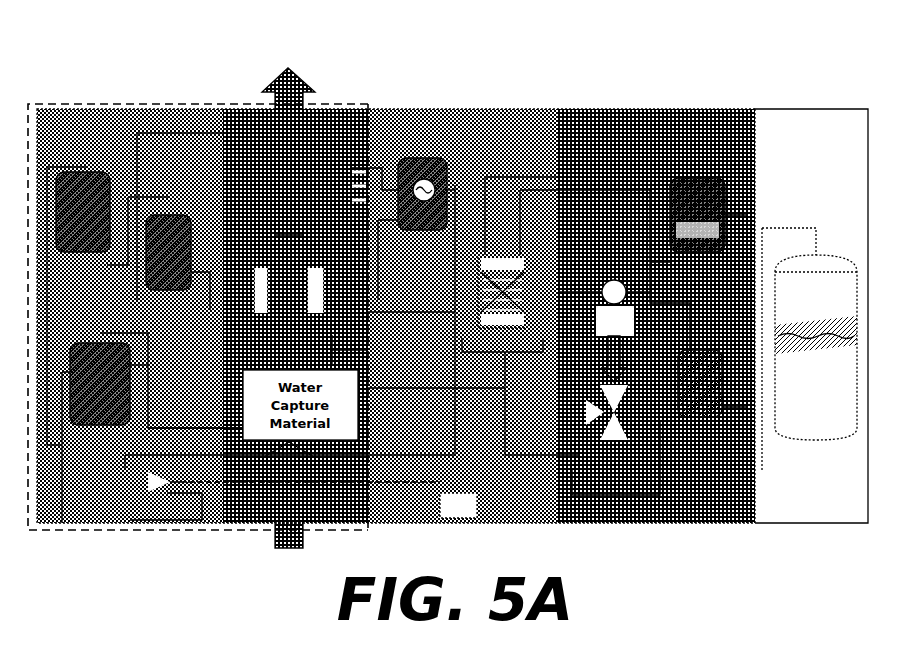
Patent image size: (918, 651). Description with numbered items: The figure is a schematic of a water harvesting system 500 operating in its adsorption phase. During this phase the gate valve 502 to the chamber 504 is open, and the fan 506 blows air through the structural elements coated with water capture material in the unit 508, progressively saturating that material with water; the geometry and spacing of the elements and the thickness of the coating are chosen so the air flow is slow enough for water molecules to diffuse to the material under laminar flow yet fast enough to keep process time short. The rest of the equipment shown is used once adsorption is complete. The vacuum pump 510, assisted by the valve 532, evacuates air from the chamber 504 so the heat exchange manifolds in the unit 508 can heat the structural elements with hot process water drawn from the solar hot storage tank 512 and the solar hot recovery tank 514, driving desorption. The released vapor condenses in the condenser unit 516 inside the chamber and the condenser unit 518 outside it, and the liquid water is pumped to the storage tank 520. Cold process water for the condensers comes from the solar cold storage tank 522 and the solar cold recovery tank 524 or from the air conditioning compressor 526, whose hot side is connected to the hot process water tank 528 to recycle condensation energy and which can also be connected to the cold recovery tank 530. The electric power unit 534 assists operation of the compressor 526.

The water harvesting system 500 is at (744, 65).
The gate valve 502 is at (356, 317).
The chamber 504 is at (198, 303).
The fan 506 is at (215, 482).
The unit 508 is at (195, 413).
The vacuum pump 510 is at (615, 319).
The solar hot storage tank 512 is at (81, 204).
The solar hot recovery tank 514 is at (178, 249).
The condenser unit 516 is at (300, 298).
The condenser unit 518 is at (521, 262).
The storage tank 520 is at (818, 254).
The solar cold storage tank 522 is at (700, 178).
The solar cold recovery tank 524 is at (702, 379).
The air conditioning compressor 526 is at (146, 483).
The hot process water tank 528 is at (94, 378).
The cold recovery tank 530 is at (429, 190).
The valve 532 is at (607, 426).
The electric power unit 534 is at (438, 505).